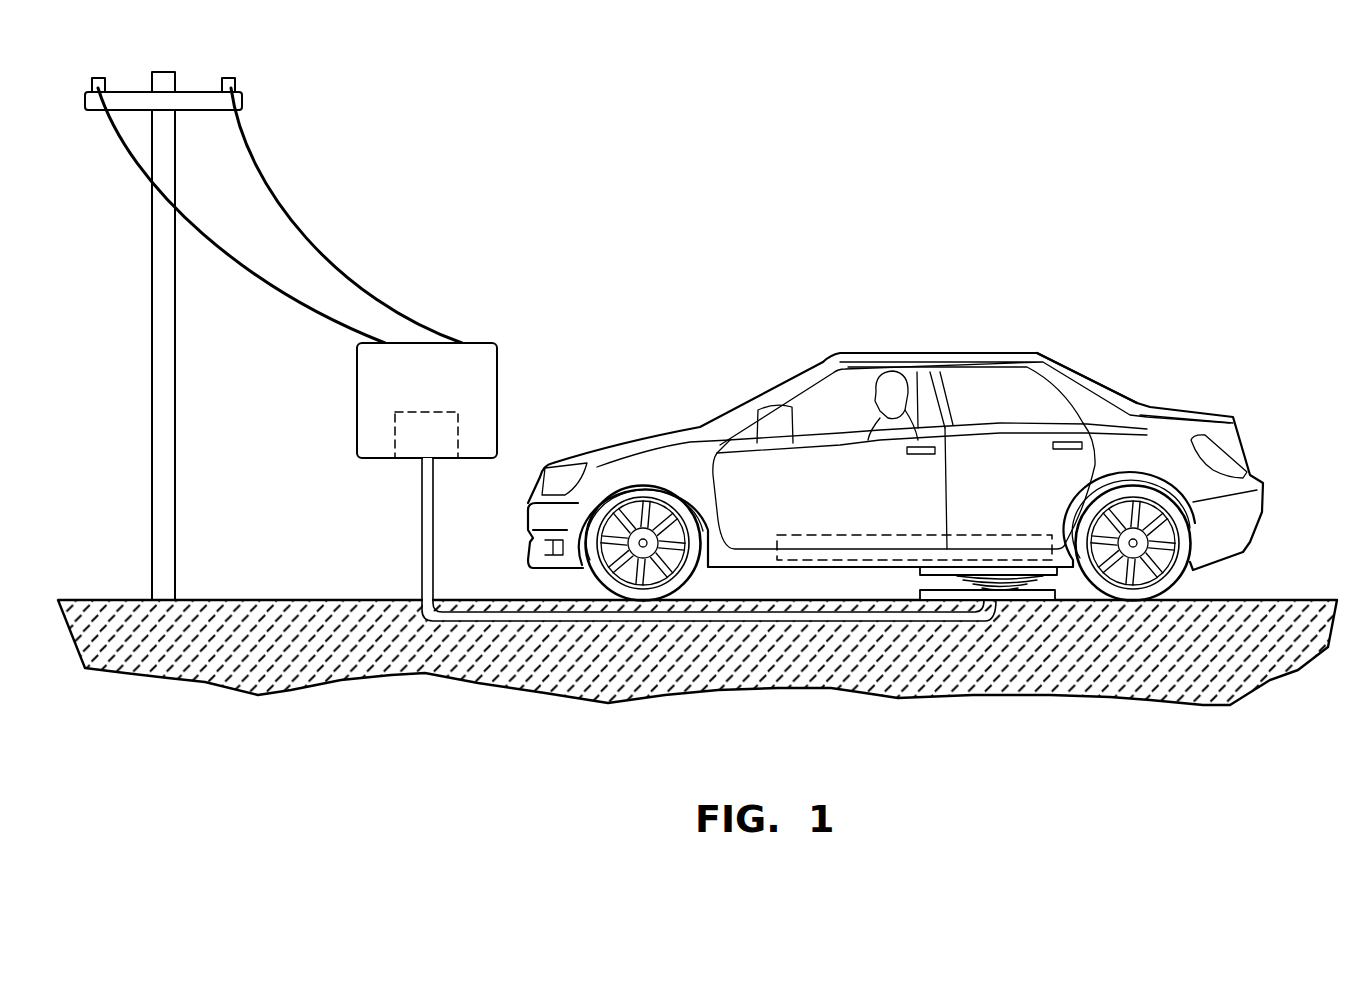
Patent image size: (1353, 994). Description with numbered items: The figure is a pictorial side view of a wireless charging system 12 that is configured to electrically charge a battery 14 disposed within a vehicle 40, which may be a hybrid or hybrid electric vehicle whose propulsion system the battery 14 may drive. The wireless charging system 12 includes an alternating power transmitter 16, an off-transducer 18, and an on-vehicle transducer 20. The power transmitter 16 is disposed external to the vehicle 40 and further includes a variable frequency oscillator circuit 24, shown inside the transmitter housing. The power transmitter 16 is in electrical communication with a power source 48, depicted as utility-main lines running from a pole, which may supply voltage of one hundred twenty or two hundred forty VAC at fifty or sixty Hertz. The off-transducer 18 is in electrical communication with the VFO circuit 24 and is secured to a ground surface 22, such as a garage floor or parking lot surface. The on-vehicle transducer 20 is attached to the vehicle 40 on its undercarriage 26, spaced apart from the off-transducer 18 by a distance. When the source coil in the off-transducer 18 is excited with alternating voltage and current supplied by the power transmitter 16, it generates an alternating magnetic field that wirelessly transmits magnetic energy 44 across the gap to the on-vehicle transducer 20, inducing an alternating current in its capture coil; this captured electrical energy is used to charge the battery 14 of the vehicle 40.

The wireless charging system 12 is at (895, 473).
The battery 14 is at (1027, 537).
The power transmitter 16 is at (669, 433).
The off-transducer 18 is at (937, 601).
The on-vehicle transducer 20 is at (1062, 577).
The ground surface 22 is at (1303, 600).
The variable frequency oscillator circuit 24 is at (392, 446).
The undercarriage 26 is at (747, 568).
The vehicle 40 is at (1063, 367).
The magnetic energy 44 is at (1002, 584).
The power source 48 is at (321, 262).